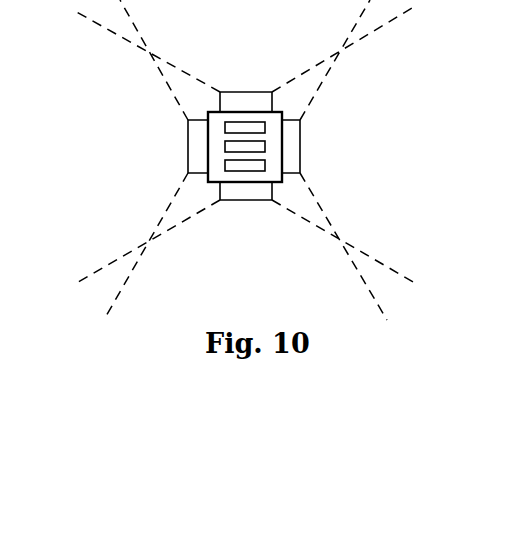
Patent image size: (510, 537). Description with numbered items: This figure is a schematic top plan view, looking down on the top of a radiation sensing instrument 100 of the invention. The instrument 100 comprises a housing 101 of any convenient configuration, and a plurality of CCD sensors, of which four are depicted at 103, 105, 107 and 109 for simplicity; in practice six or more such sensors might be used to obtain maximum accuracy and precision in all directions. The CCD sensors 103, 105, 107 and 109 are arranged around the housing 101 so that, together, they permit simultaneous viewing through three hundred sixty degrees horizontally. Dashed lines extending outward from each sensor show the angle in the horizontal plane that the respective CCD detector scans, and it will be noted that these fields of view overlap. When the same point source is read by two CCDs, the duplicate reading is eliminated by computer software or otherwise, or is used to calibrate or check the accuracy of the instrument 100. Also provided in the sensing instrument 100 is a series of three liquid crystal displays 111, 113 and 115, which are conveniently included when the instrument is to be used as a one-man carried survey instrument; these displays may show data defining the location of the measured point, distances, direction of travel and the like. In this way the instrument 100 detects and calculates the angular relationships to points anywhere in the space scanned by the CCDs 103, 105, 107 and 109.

The instrument 100 is at (390, 113).
The housing 101 is at (175, 90).
The CCD sensor 103 is at (302, 147).
The CCD sensor 105 is at (243, 201).
The CCD sensor 107 is at (190, 130).
The CCD sensor 109 is at (255, 92).
The liquid crystal display 111 is at (293, 174).
The liquid crystal display 113 is at (189, 175).
The liquid crystal display 115 is at (233, 124).